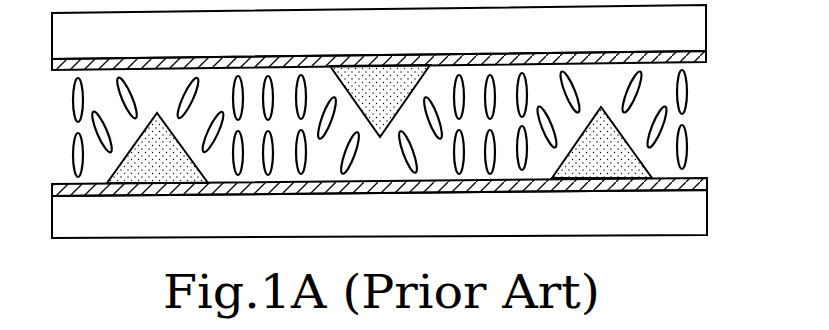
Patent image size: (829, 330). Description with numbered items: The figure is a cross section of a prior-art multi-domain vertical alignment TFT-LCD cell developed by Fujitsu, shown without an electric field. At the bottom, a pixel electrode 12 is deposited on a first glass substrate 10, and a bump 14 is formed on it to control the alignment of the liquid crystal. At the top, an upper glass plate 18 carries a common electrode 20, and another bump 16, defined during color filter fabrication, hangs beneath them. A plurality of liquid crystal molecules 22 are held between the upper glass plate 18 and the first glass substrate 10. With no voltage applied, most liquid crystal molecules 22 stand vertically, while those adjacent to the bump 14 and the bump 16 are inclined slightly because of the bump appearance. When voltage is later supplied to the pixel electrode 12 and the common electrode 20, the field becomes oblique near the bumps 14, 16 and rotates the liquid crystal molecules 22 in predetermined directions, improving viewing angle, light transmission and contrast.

The first glass substrate 10 is at (393, 227).
The pixel electrode 12 is at (707, 180).
The bump 14 is at (170, 173).
The bump 16 is at (392, 97).
The upper glass plate 18 is at (392, 42).
The common electrode 20 is at (707, 58).
The liquid crystal molecules 22 is at (687, 106).